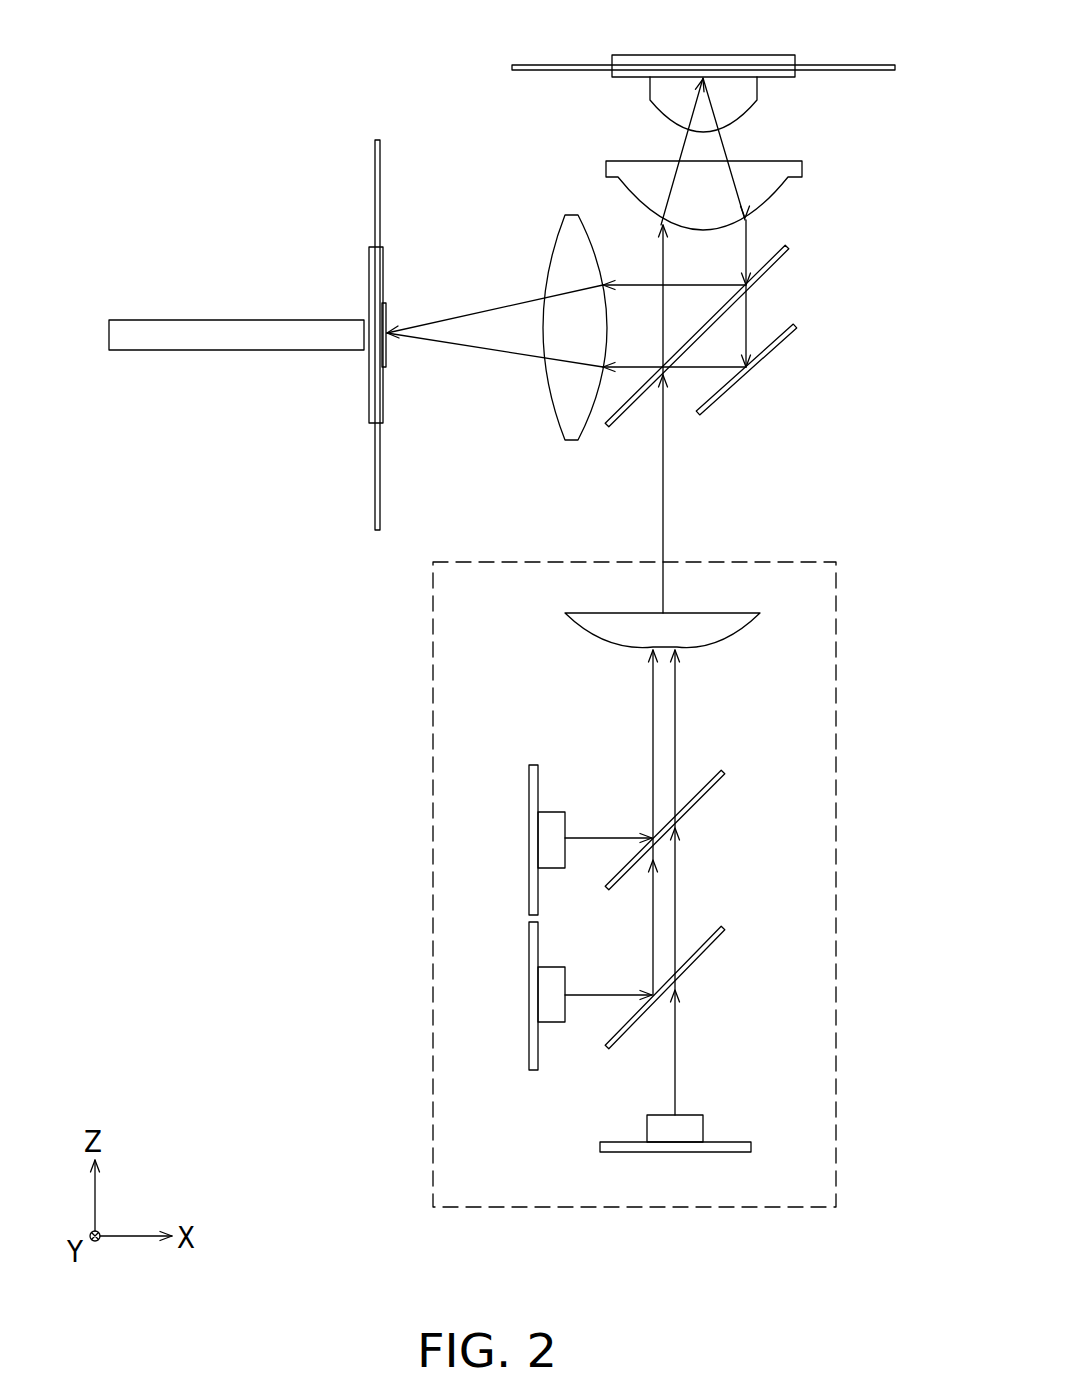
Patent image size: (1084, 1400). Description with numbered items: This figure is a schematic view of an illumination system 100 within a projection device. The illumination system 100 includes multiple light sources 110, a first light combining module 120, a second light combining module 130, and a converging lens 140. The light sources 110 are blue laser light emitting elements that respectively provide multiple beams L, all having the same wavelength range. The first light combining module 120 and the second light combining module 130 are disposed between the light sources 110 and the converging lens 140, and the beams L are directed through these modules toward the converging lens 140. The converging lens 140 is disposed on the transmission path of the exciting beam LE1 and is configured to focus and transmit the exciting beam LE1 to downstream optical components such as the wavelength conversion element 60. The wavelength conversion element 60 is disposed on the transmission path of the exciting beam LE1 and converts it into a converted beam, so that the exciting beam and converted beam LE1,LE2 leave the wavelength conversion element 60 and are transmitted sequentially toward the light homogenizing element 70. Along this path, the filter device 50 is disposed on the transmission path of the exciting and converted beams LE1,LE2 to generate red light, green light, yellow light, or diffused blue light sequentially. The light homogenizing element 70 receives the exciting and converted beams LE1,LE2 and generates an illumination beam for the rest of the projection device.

The wavelength conversion element 60 is at (878, 65).
The filter device 50 is at (823, 232).
The exciting beam and converted beam LE1,LE2 is at (728, 147).
The exciting beam LE1 is at (663, 519).
The light homogenizing element 70 is at (137, 320).
The illumination system 100 is at (836, 1053).
The converging lens 140 is at (745, 622).
The second light combining module 130 is at (713, 780).
The first light combining module 120 is at (713, 938).
The light sources 110 is at (529, 835).
The beams L is at (675, 1063).